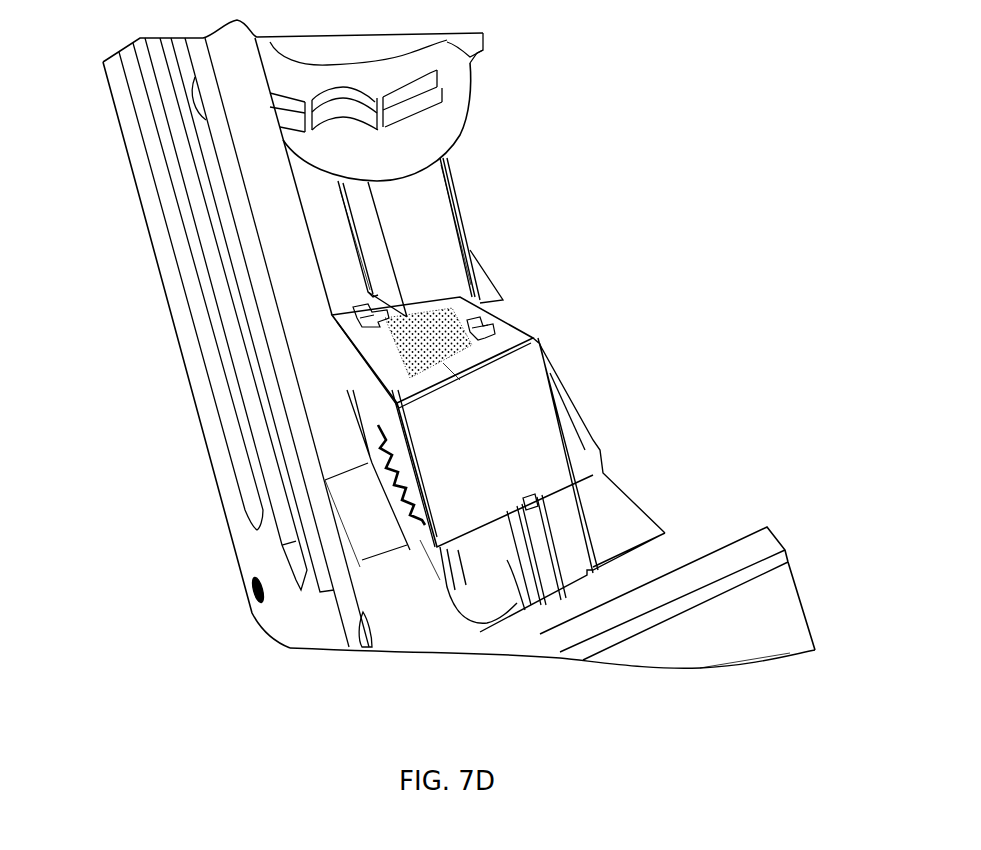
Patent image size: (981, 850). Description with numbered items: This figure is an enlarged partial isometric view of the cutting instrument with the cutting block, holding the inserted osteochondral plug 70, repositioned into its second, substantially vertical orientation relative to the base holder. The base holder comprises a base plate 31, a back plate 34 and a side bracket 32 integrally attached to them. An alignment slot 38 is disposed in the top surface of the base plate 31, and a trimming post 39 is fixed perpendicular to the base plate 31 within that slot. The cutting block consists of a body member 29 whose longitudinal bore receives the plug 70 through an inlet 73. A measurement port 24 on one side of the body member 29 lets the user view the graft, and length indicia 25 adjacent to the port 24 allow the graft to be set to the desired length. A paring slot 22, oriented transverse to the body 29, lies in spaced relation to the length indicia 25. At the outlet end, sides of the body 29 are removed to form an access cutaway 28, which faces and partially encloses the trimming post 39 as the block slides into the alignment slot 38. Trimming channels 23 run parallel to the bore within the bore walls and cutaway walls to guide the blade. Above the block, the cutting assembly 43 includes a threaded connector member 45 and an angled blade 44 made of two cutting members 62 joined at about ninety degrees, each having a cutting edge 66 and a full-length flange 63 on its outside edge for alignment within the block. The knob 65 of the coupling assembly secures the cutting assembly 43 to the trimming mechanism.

The paring slot 22 is at (527, 503).
The trimming channels 23 is at (367, 323).
The measurement port 24 is at (415, 450).
The length indicia 25 is at (438, 465).
The access cutaway 28 is at (537, 590).
The body member 29 is at (533, 437).
The base plate 31 is at (597, 432).
The side bracket 32 is at (780, 637).
The back plate 34 is at (250, 552).
The alignment slot 38 is at (627, 530).
The trimming post 39 is at (488, 600).
The cutting assembly 43 is at (497, 148).
The angled blade 44 is at (400, 260).
The threaded connector member 45 is at (455, 117).
The cutting members 62 is at (360, 247).
The flange 63 is at (333, 197).
The knob 65 is at (462, 48).
The cutting edge 66 is at (377, 303).
The osteochondral plug 70 is at (407, 362).
The inlet 73 is at (443, 363).